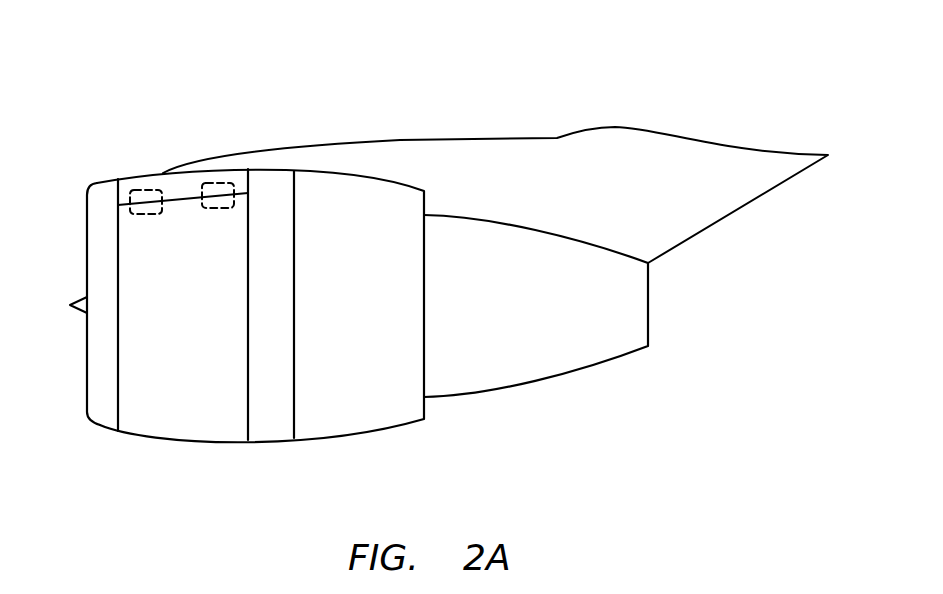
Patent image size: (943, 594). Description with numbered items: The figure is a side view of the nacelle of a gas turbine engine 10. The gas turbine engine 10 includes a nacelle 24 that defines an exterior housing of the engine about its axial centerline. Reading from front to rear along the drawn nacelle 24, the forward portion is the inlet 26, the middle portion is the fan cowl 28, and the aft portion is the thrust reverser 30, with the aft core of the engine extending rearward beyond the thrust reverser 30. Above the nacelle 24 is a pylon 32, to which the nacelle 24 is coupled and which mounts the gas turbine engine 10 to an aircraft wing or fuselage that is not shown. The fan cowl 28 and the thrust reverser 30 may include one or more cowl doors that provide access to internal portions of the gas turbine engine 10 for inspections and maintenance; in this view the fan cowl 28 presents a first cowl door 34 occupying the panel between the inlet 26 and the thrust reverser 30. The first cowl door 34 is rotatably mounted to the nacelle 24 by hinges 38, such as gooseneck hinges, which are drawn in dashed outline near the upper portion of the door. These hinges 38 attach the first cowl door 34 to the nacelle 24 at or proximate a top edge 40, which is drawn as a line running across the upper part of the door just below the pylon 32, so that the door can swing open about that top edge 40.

The gas turbine engine 10 is at (435, 277).
The nacelle 24 is at (88, 168).
The inlet 26 is at (98, 430).
The fan cowl 28 is at (215, 456).
The thrust reverser 30 is at (380, 410).
The pylon 32 is at (630, 140).
The first cowl door 34 is at (160, 405).
The hinges 38 is at (143, 190).
The top edge 40 is at (188, 197).